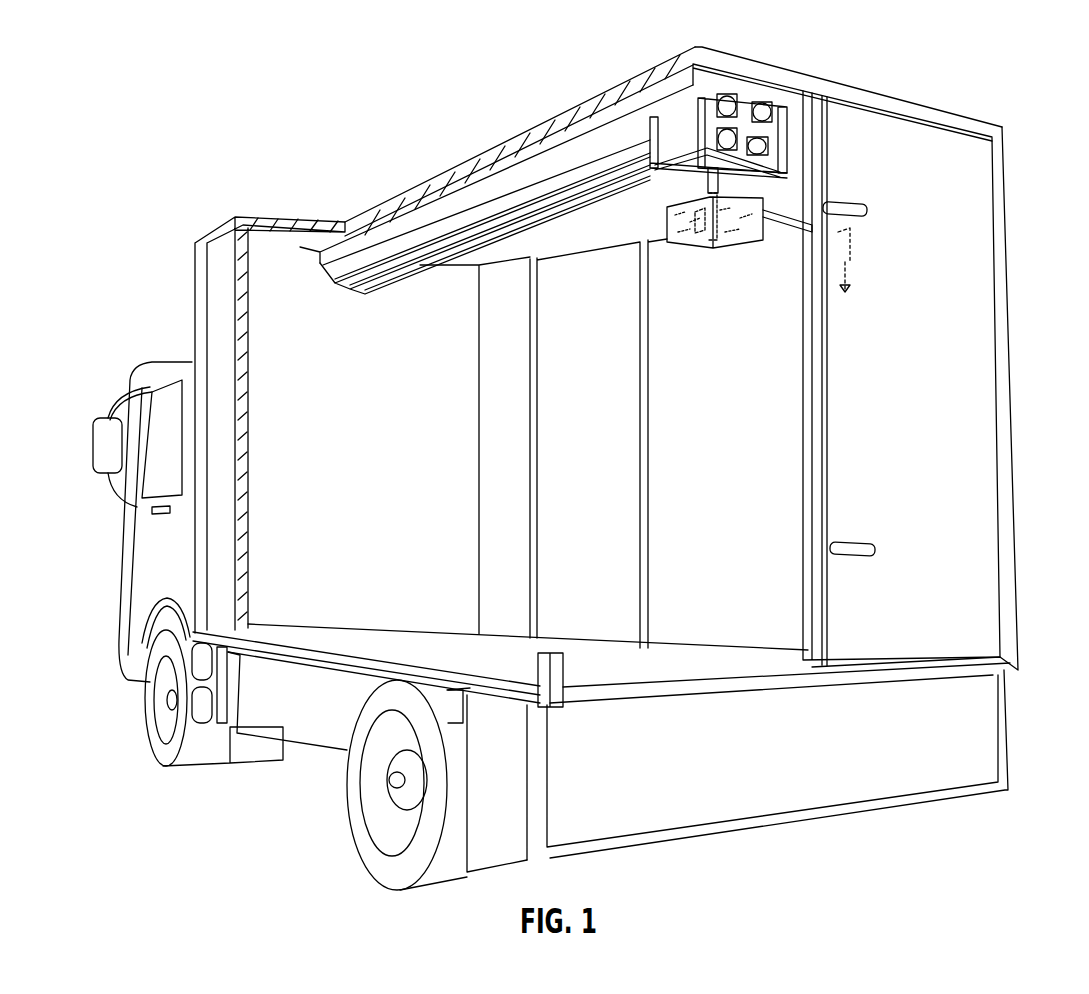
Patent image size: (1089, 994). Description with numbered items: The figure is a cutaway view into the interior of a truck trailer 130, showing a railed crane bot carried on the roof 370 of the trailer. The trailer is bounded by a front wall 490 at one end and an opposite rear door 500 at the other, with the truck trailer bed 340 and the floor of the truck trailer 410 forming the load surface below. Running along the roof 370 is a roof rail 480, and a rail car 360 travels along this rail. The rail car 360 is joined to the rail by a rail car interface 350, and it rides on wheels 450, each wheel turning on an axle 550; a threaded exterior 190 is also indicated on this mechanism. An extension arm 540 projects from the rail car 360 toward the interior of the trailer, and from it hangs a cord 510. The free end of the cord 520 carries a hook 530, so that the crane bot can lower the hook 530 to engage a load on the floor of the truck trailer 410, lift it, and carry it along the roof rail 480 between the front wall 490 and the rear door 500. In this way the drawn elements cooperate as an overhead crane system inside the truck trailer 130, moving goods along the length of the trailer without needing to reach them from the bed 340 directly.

The truck trailer 130 is at (170, 98).
The threaded exterior 190 is at (697, 232).
The truck trailer bed 340 is at (663, 660).
The rail car interface 350 is at (743, 250).
The rail car 360 is at (648, 208).
The roof 370 is at (902, 128).
The floor of the truck trailer 410 is at (398, 640).
The wheel 450 is at (692, 83).
The roof rail 480 is at (385, 262).
The front wall 490 is at (255, 298).
The opposite rear door 500 is at (983, 462).
The cord 510 is at (843, 260).
The free end of the cord 520 is at (843, 287).
The hook 530 is at (838, 287).
The extension arm 540 is at (782, 215).
The axle 550 is at (712, 240).